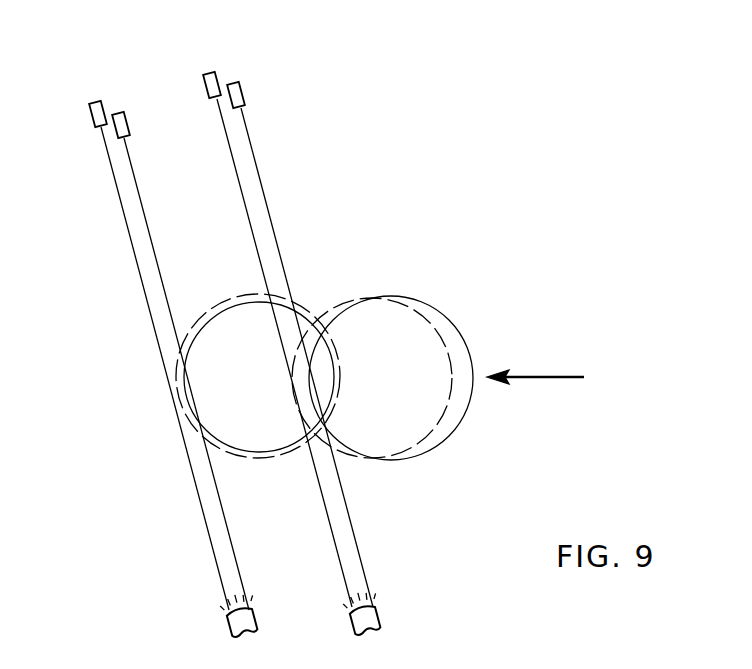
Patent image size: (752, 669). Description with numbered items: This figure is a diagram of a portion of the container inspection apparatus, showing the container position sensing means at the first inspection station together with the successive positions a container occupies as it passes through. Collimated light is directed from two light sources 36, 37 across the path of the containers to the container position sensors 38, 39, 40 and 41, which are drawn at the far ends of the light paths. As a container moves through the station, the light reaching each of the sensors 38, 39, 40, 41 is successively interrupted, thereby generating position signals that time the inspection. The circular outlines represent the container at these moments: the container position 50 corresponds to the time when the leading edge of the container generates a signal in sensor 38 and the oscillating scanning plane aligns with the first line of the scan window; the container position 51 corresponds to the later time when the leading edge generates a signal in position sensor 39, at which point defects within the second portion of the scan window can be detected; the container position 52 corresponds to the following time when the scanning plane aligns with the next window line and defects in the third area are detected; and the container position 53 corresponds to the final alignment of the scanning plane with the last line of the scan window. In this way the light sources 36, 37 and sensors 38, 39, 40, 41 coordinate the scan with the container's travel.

The light source 36 is at (380, 612).
The light source 37 is at (231, 620).
The container position sensor 38 is at (243, 90).
The container position sensor 39 is at (205, 84).
The container position sensor 40 is at (127, 113).
The container position sensor 41 is at (92, 115).
The container position 50 is at (433, 300).
The container position 51 is at (345, 301).
The container position 52 is at (196, 338).
The container position 53 is at (205, 311).